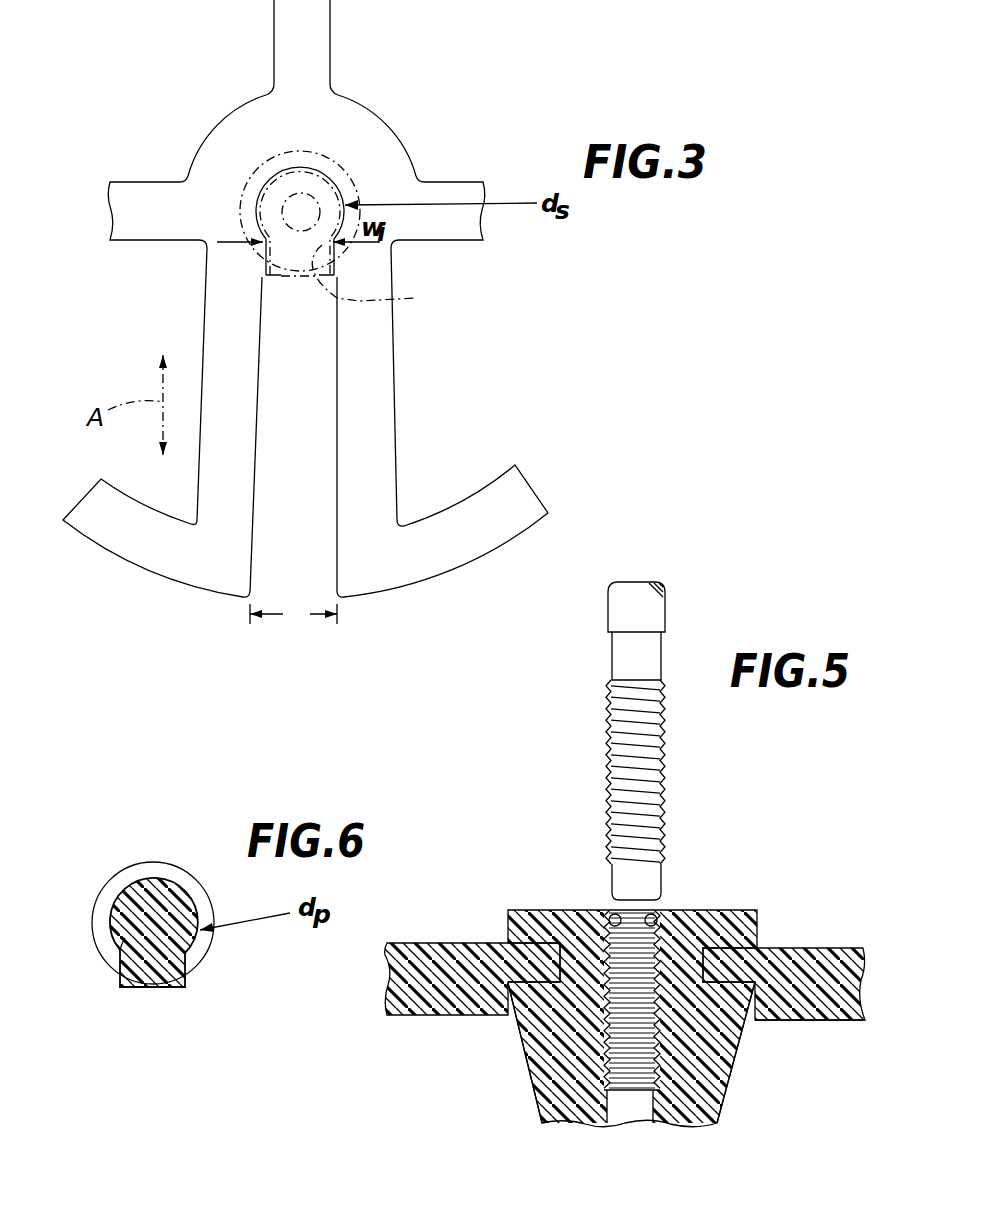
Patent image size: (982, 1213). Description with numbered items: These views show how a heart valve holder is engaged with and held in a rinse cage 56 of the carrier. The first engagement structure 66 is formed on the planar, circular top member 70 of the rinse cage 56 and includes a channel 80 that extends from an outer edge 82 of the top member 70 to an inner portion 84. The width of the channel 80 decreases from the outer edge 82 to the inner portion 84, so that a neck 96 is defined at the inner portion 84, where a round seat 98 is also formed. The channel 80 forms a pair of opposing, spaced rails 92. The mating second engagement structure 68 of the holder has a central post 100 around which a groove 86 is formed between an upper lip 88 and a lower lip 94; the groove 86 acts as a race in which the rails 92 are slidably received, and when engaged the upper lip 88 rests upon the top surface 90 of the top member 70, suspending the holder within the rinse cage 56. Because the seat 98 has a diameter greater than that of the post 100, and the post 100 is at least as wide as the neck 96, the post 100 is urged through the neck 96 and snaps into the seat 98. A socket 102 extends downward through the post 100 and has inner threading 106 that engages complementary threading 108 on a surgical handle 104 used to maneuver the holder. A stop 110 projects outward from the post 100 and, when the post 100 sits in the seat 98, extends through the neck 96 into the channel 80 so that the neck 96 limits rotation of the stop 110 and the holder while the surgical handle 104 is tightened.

In FIG. 3, the rinse cage 56 is at (541, 480).
In FIG. 3, the first engagement structure 66 is at (279, 525).
In FIG. 3, the top member 70 is at (495, 503).
In FIG. 5, the top member 70 is at (390, 1017).
In FIG. 3, the channel 80 is at (315, 344).
In FIG. 5, the channel 80 is at (537, 1033).
In FIG. 3, the outer edge 82 is at (352, 597).
In FIG. 3, the inner portion 84 is at (358, 142).
In FIG. 3, the groove 86 is at (313, 203).
In FIG. 5, the groove 86 is at (790, 1019).
In FIG. 6, the groove 86 is at (163, 877).
In FIG. 3, the upper lip 88 is at (263, 167).
In FIG. 5, the upper lip 88 is at (750, 935).
In FIG. 3, the top surface 90 is at (315, 128).
In FIG. 5, the top surface 90 is at (847, 948).
In FIG. 5, the rails 92 is at (543, 957).
In FIG. 5, the lower lip 94 is at (725, 1027).
In FIG. 3, the neck 96 is at (380, 278).
In FIG. 3, the seat 98 is at (260, 230).
In FIG. 5, the central post 100 is at (708, 1095).
In FIG. 6, the central post 100 is at (122, 920).
In FIG. 3, the socket 102 is at (353, 170).
In FIG. 5, the socket 102 is at (612, 913).
In FIG. 5, the surgical handle 104 is at (618, 667).
In FIG. 5, the inner threading 106 is at (655, 912).
In FIG. 5, the threading 108 is at (608, 752).
In FIG. 3, the stop 110 is at (293, 278).
In FIG. 6, the stop 110 is at (173, 987).
In FIG. 6, the second engagement structure 68 is at (152, 850).